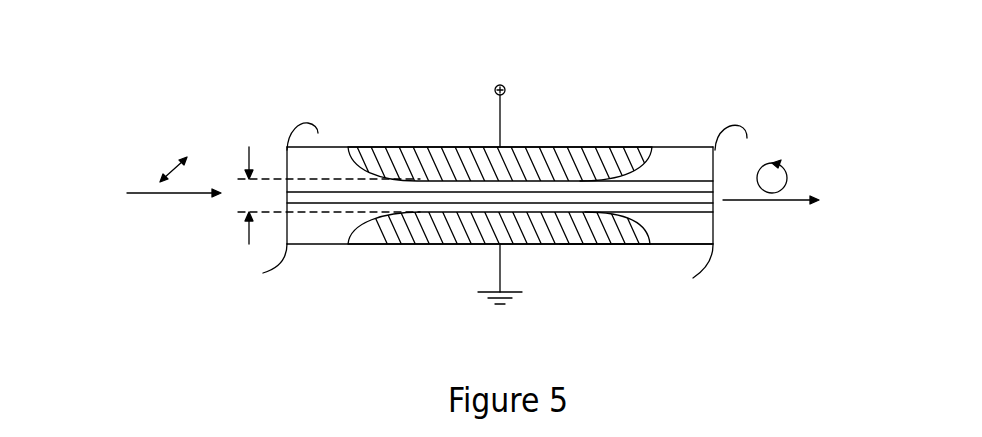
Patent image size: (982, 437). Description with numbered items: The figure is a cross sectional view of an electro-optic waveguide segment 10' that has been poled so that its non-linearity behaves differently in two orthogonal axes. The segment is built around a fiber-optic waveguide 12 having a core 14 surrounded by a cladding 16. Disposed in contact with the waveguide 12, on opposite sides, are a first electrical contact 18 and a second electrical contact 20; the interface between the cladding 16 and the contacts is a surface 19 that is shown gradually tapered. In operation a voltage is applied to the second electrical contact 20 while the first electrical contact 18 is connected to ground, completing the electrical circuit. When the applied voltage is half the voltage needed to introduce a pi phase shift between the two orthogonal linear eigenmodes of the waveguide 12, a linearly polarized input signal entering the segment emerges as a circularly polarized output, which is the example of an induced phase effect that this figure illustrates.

The electro-optic waveguide segment 10' is at (428, 187).
The fiber-optic waveguide 12 is at (808, 287).
The core 14 is at (728, 190).
The cladding 16 is at (682, 247).
The first electrical contact 18 is at (603, 248).
The surface 19 is at (355, 236).
The second electrical contact 20 is at (633, 148).